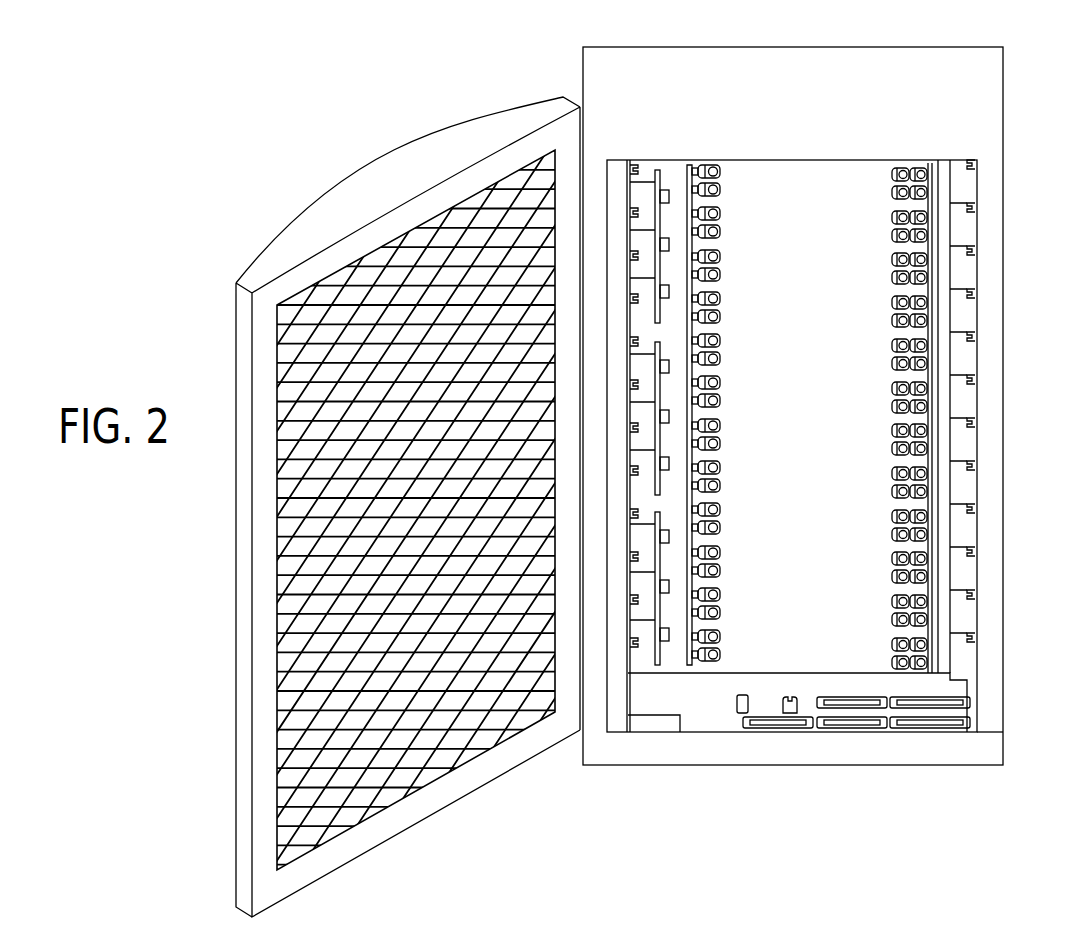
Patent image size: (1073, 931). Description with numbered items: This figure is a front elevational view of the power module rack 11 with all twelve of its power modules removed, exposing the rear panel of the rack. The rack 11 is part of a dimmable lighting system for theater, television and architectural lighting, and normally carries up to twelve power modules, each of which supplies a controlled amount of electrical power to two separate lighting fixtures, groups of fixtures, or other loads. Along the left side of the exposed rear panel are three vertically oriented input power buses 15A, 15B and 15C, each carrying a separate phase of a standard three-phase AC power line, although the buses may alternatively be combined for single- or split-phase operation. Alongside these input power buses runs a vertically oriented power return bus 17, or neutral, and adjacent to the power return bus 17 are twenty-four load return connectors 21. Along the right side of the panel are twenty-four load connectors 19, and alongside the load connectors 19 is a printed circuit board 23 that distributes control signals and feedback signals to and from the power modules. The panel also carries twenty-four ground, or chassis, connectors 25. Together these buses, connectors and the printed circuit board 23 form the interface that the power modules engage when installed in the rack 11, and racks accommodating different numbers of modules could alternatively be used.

The rack 11 is at (400, 71).
The input power bus 15A is at (655, 268).
The input power bus 15B is at (655, 440).
The input power bus 15C is at (655, 606).
The power return bus 17 is at (690, 193).
The load connectors 19 is at (925, 300).
The load return connectors 21 is at (720, 213).
The printed circuit board 23 is at (950, 180).
The ground connectors 25 is at (893, 303).